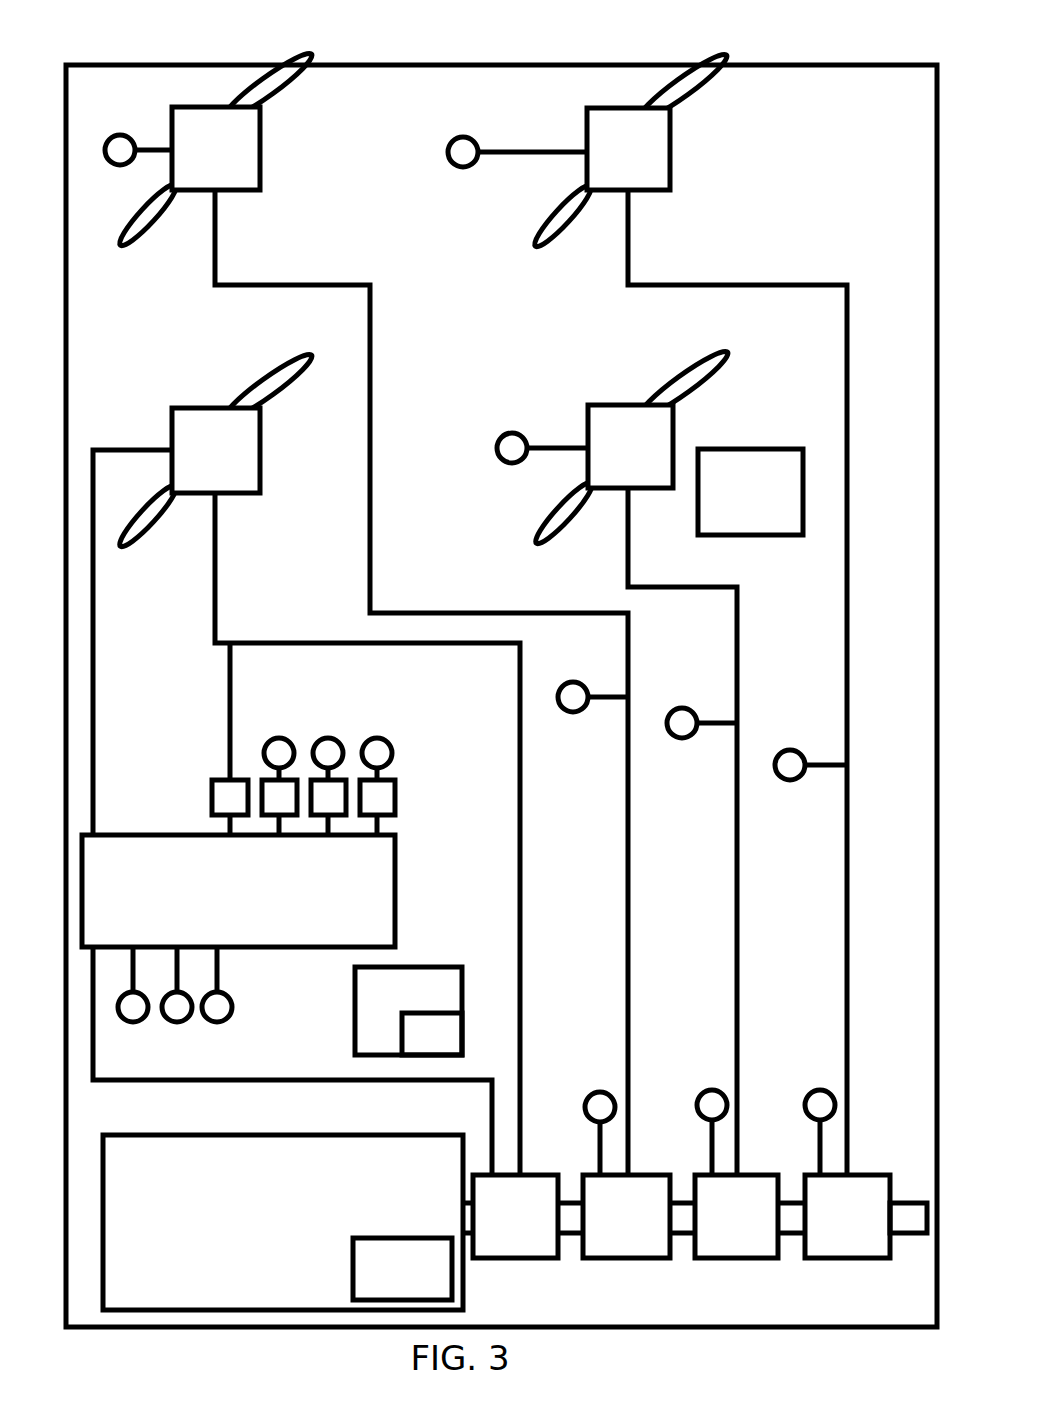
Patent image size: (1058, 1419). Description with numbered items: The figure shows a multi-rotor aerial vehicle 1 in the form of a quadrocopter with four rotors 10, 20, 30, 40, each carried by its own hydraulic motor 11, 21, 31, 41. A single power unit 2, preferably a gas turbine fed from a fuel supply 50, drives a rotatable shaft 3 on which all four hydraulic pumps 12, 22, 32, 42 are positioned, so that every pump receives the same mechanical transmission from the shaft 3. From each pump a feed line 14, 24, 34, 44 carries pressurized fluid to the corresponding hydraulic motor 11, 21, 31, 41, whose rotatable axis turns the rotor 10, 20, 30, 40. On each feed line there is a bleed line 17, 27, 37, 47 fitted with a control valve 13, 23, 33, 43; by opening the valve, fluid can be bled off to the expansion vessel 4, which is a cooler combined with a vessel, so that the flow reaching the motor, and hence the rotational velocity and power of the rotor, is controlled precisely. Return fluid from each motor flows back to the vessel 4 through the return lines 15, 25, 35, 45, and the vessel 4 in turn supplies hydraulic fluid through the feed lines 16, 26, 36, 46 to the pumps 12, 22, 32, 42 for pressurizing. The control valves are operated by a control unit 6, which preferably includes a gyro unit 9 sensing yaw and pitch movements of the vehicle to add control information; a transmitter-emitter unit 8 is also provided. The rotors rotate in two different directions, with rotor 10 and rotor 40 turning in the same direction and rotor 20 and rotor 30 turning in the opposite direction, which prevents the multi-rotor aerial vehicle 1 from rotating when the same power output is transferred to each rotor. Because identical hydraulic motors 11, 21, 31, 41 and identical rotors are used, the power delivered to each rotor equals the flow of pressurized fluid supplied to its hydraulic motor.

The multi-rotor aerial vehicle 1 is at (800, 108).
The power unit 2 is at (454, 1222).
The rotatable shaft 3 is at (912, 1200).
The expansion vessel 4 is at (238, 891).
The control unit 6 is at (408, 1011).
The transmitter-emitter unit 8 is at (750, 492).
The gyro unit 9 is at (432, 1034).
The rotor 10 is at (255, 392).
The hydraulic motor 11 is at (216, 450).
The hydraulic pump 12 is at (515, 1216).
The control valve 13 is at (230, 792).
The fluid line 14 is at (517, 898).
The return fluid line 15 is at (92, 643).
The feed line of hydraulic fluid 16 is at (310, 1075).
The bleed line 17 is at (228, 708).
The rotor 20 is at (272, 77).
The hydraulic motor 21 is at (216, 148).
The hydraulic pump 22 is at (626, 1216).
The control valve 23 is at (280, 795).
The feed line 24 is at (625, 993).
The return fluid line 25 is at (115, 165).
The feed line of hydraulic fluid 26 is at (133, 1022).
The bleed line 27 is at (279, 738).
The rotor 30 is at (678, 385).
The hydraulic motor 31 is at (630, 446).
The hydraulic pump 32 is at (736, 1216).
The control valve 33 is at (329, 793).
The feed line 34 is at (735, 965).
The return fluid line 35 is at (505, 430).
The feed line of hydraulic fluid 36 is at (177, 1022).
The bleed line 37 is at (333, 740).
The rotor 40 is at (680, 90).
The hydraulic motor 41 is at (628, 149).
The hydraulic pump 42 is at (847, 1216).
The control valve 43 is at (378, 800).
The feed line 44 is at (842, 1017).
The return fluid line 45 is at (455, 135).
The feed line of hydraulic fluid 46 is at (217, 1022).
The bleed line 47 is at (388, 742).
The fuel supply 50 is at (402, 1269).